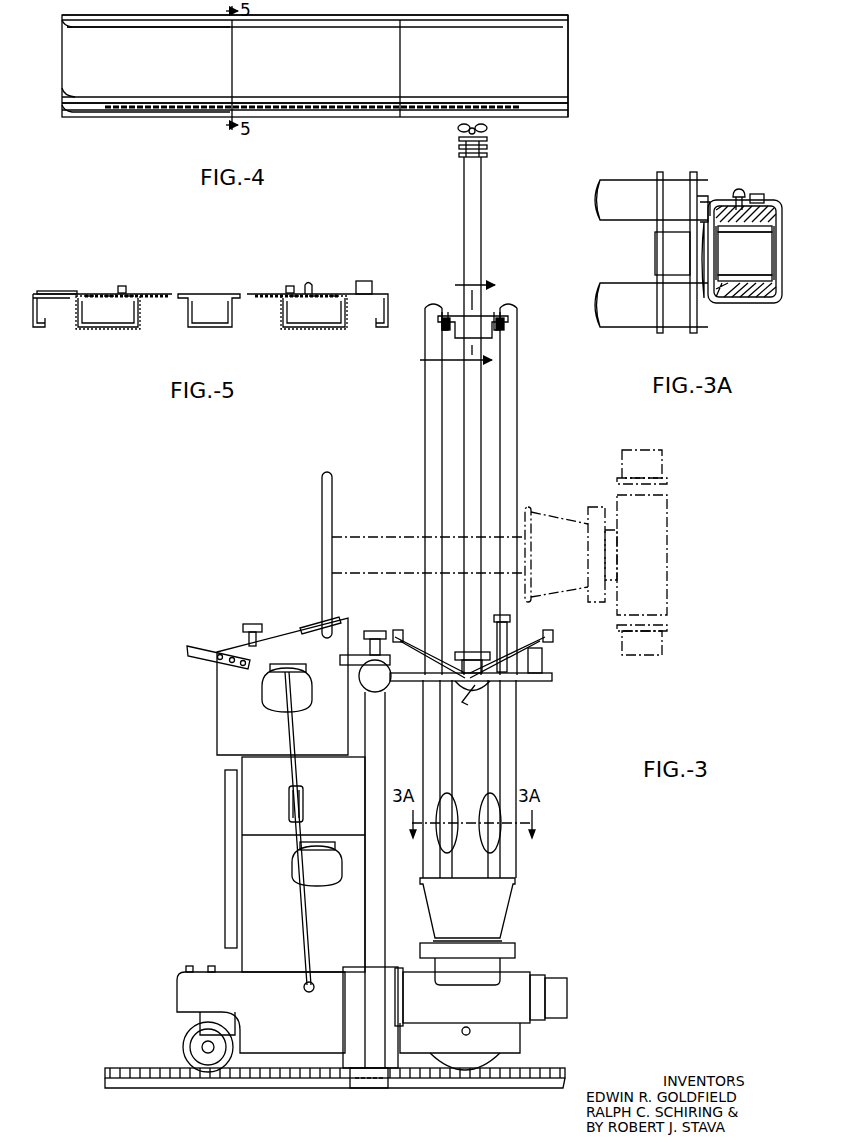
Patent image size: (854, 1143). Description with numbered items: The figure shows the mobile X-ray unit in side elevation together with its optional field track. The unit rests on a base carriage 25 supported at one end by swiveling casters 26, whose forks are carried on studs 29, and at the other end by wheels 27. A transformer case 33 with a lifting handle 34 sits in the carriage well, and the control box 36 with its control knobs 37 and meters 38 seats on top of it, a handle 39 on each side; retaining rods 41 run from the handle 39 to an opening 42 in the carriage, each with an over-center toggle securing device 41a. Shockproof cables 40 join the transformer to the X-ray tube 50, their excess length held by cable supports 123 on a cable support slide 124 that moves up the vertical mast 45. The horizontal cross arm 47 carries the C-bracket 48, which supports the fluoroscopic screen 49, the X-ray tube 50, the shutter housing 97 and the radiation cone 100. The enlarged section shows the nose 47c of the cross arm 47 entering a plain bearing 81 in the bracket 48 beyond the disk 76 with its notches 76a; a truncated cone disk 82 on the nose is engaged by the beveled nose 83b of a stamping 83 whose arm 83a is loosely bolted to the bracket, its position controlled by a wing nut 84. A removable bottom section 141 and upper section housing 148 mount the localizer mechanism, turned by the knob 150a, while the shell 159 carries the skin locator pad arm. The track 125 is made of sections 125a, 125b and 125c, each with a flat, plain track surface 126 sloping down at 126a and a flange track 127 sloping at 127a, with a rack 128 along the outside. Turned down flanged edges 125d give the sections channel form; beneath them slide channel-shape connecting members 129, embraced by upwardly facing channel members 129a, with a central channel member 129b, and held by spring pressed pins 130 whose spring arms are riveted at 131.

In FIG. 3, the base carriage 25 is at (178, 1000).
In FIG. 3, the swiveling casters 26 is at (184, 1052).
In FIG. 3, the wheels 27 is at (500, 1062).
In FIG. 3, the studs 29 is at (444, 323).
In FIG. 3, the transformer case 33 is at (295, 864).
In FIG. 3, the handle 34 is at (325, 882).
In FIG. 3, the control box 36 is at (217, 718).
In FIG. 3, the control knobs 37 is at (252, 623).
In FIG. 3, the meters 38 is at (318, 622).
In FIG. 3, the handle 39 is at (305, 702).
In FIG. 3, the shockproof cables 40 is at (520, 466).
In FIG. 3, the retaining rods 41 is at (290, 730).
In FIG. 3, the over-center toggle securing device 41a is at (303, 802).
In FIG. 3, the opening 42 is at (307, 990).
In FIG. 3, the vertical mast 45 is at (482, 256).
In FIG. 3A, the horizontal cross arm 47 is at (604, 290).
In FIG. 3A, the nose 47c is at (745, 253).
In FIG. 3A, the C-bracket 48 is at (776, 300).
In FIG. 3, the C-bracket 48 is at (482, 727).
In FIG. 3, the fluoroscopic screen 49 is at (322, 500).
In FIG. 3, the X-ray tube 50 is at (567, 1006).
In FIG. 3A, the disk 76 is at (692, 185).
In FIG. 3A, the notches 76a is at (697, 198).
In FIG. 3A, the plain bearing 81 is at (755, 282).
In FIG. 3A, the truncated cone disk 82 is at (706, 296).
In FIG. 3A, the stamping 83 is at (702, 200).
In FIG. 3A, the arm 83a is at (760, 196).
In FIG. 3A, the beveled nose 83b is at (702, 208).
In FIG. 3A, the wing nut 84 is at (742, 188).
In FIG. 3, the housing 97 is at (515, 950).
In FIG. 3, the radiation cone 100 is at (500, 906).
In FIG. 3, the cable supports 123 is at (426, 306).
In FIG. 3, the cable support slide 124 is at (478, 320).
In FIG. 4, the track 125 is at (568, 68).
In FIG. 3, the track 125 is at (440, 1080).
In FIG. 4, the track section 125a is at (191, 68).
In FIG. 4, the track section 125b is at (347, 68).
In FIG. 4, the track section 125c is at (515, 66).
In FIG. 5, the turned down flanged edges 125d is at (40, 330).
In FIG. 4, the flat, plain track surface 126 is at (568, 20).
In FIG. 5, the flat, plain track surface 126 is at (55, 291).
In FIG. 4, the sloping point 126a is at (68, 26).
In FIG. 4, the flange track 127 is at (553, 104).
In FIG. 5, the flange track 127 is at (314, 286).
In FIG. 4, the sloping point 127a is at (66, 110).
In FIG. 4, the rack 128 is at (331, 112).
In FIG. 5, the rack 128 is at (366, 281).
In FIG. 3, the rack 128 is at (292, 1080).
In FIG. 5, the channel-shape connecting members 129 is at (136, 316).
In FIG. 5, the upwardly facing channel members 129a is at (103, 330).
In FIG. 5, the upwardly facing channel member 129b is at (222, 330).
In FIG. 5, the spring pressed pins 130 is at (123, 286).
In FIG. 5, the riveting points 131 is at (255, 296).
In FIG. 3, the removable bottom section 141 is at (350, 1027).
In FIG. 3, the upper section housing 148 is at (386, 727).
In FIG. 3, the knob 150a is at (376, 655).
In FIG. 3, the shell 159 is at (507, 632).